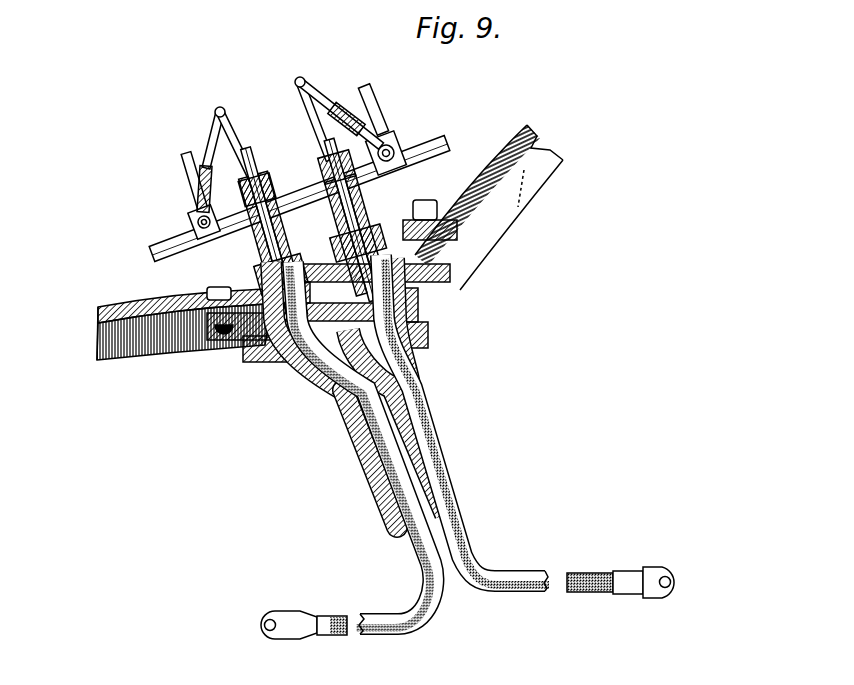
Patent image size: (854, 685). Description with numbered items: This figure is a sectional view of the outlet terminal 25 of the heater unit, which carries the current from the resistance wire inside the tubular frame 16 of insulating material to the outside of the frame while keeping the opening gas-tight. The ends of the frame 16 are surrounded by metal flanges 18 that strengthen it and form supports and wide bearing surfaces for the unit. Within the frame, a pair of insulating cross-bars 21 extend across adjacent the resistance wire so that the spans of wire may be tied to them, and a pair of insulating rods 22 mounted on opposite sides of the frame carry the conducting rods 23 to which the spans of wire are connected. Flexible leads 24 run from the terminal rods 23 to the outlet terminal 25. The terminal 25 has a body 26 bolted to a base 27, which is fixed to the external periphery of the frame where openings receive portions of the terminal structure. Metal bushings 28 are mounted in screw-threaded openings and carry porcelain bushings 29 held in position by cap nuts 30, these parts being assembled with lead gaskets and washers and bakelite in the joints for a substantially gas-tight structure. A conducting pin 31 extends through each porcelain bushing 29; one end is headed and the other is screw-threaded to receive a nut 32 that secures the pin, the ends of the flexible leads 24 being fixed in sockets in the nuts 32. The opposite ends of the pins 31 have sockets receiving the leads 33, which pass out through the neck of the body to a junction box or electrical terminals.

The tubular frame 16 is at (130, 307).
The metal flanges 18 is at (330, 261).
The cross-bars 21 is at (220, 108).
The insulating rods 22 is at (165, 255).
The conducting rods 23 is at (187, 177).
The flexible leads 24 is at (300, 80).
The outlet terminal 25 is at (431, 418).
The body 26 is at (260, 357).
The base 27 is at (455, 237).
The metal bushings 28 is at (378, 327).
The porcelain bushings 29 is at (277, 250).
The cap nuts 30 is at (343, 256).
The conducting pin 31 is at (338, 215).
The nut 32 is at (318, 150).
The leads 33 is at (328, 358).